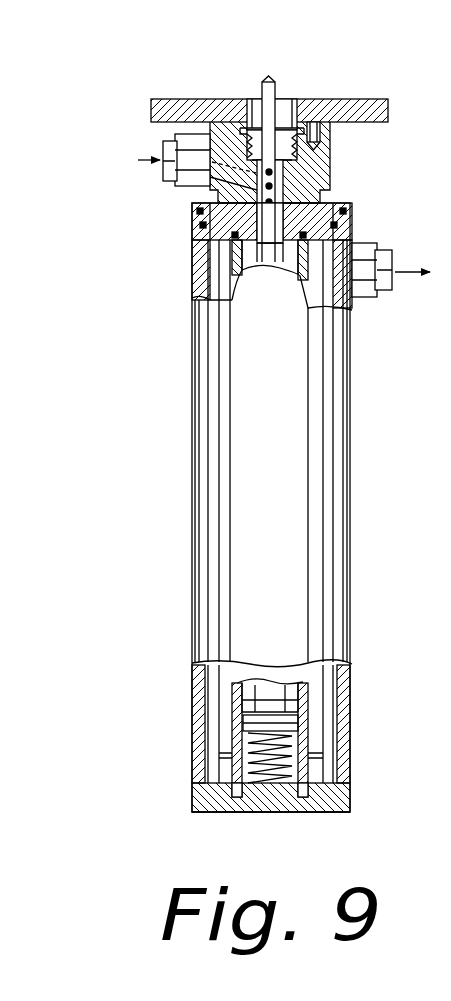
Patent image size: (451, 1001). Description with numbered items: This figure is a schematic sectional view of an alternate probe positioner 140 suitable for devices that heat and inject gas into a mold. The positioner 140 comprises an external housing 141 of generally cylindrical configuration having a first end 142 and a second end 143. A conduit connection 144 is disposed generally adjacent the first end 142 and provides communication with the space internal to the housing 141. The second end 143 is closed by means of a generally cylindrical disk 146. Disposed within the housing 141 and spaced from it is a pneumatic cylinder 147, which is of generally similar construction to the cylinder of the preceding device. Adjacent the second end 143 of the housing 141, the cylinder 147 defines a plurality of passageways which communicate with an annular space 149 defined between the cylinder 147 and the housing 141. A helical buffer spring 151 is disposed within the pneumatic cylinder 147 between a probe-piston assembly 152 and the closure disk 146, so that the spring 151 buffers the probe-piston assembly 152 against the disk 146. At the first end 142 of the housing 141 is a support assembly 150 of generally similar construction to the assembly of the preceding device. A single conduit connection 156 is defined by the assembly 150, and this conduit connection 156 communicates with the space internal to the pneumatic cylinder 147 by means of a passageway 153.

The probe positioner 140 is at (148, 315).
The external housing 141 is at (190, 660).
The first end 142 is at (192, 229).
The second end 143 is at (192, 786).
The conduit connection 144 is at (376, 292).
The cylindrical disk 146 is at (245, 812).
The pneumatic cylinder 147 is at (232, 275).
The annular space 149 is at (232, 708).
The support assembly 150 is at (322, 180).
The helical buffer spring 151 is at (293, 758).
The probe-piston assembly 152 is at (238, 682).
The passageway 153 is at (225, 163).
The conduit connection 156 is at (174, 147).